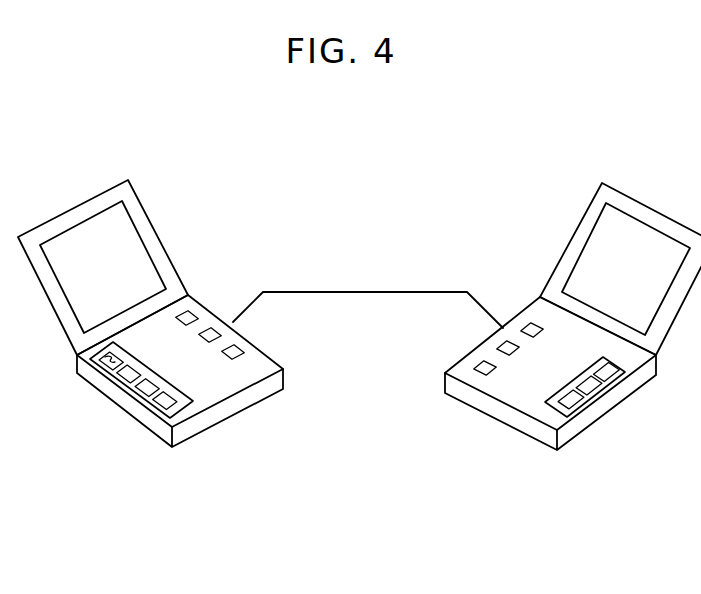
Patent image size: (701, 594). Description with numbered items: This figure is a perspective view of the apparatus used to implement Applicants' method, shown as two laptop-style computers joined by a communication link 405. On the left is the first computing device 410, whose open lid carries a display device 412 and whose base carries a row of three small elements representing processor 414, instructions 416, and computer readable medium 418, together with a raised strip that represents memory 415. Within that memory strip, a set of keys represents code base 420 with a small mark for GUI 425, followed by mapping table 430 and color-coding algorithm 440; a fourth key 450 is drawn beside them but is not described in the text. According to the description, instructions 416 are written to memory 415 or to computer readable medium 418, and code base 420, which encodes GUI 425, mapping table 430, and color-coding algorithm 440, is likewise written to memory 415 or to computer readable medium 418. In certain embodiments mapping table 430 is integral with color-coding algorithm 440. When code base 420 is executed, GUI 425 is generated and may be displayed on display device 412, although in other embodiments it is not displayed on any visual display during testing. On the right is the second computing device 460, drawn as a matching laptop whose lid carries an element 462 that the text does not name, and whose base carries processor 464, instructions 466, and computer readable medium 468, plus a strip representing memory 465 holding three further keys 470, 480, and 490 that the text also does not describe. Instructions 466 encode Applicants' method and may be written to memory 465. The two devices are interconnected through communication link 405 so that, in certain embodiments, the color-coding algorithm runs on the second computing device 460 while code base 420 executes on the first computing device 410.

The communication link 405 is at (362, 292).
The computing device 410 is at (162, 480).
The display device 412 is at (103, 267).
The processor 414 is at (188, 312).
The memory 415 is at (198, 403).
The instructions 416 is at (213, 333).
The computer readable medium 418 is at (238, 352).
The code base 420 is at (107, 373).
The GUI 425 is at (100, 358).
The mapping table 430 is at (125, 380).
The color-coding algorithm 440 is at (143, 403).
The key 450 is at (165, 415).
The computing device 460 is at (543, 483).
The display of second device 462 is at (626, 269).
The processor 464 is at (530, 325).
The memory 465 is at (553, 407).
The instructions 466 is at (500, 350).
The computer readable medium 468 is at (478, 364).
The key 470 is at (610, 371).
The key 480 is at (590, 387).
The key 490 is at (571, 400).